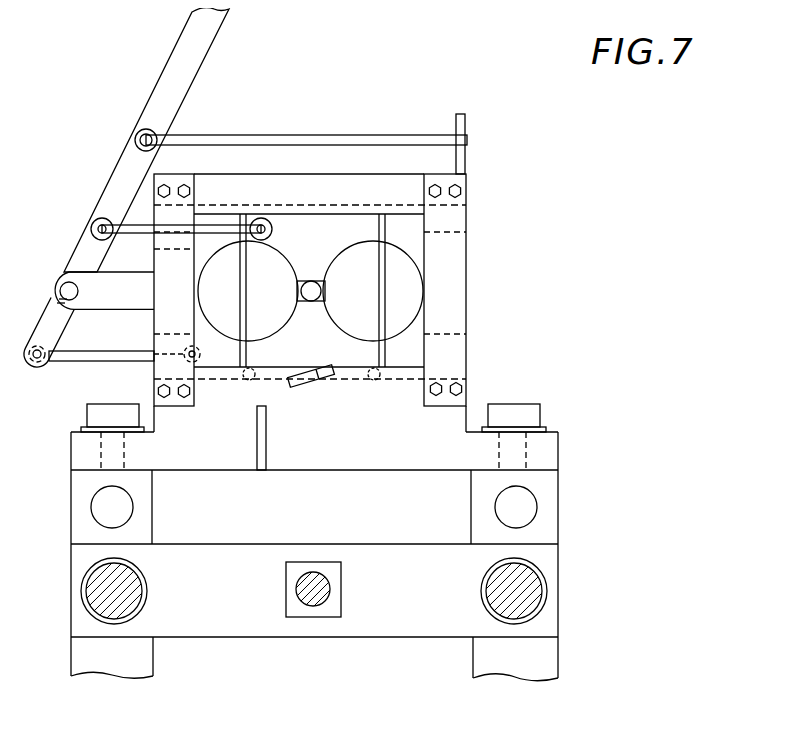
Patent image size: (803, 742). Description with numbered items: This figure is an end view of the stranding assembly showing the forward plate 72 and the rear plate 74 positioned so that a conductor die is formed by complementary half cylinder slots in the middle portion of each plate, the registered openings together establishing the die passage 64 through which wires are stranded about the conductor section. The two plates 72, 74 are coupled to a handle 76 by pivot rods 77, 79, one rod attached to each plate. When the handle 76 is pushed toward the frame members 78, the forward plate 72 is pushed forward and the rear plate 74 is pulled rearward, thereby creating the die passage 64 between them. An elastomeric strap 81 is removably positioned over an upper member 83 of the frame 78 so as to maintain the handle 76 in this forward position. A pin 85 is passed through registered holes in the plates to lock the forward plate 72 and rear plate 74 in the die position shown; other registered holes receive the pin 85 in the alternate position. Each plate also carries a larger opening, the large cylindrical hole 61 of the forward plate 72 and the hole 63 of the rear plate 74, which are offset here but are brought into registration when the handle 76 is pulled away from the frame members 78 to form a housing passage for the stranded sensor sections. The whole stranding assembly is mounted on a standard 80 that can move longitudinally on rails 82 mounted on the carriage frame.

The large cylindrical hole 61 is at (403, 263).
The hole 63 is at (269, 241).
The die passage 64 is at (304, 278).
The forward plate 72 is at (404, 338).
The rear plate 74 is at (354, 294).
The handle 76 is at (151, 79).
The pivot rod 77 is at (128, 218).
The frame members 78 is at (164, 177).
The pivot rod 79 is at (73, 348).
The standard 80 is at (434, 424).
The elastomeric strap 81 is at (379, 129).
The rails 82 is at (89, 498).
The upper member 83 is at (459, 115).
The pin 85 is at (305, 373).